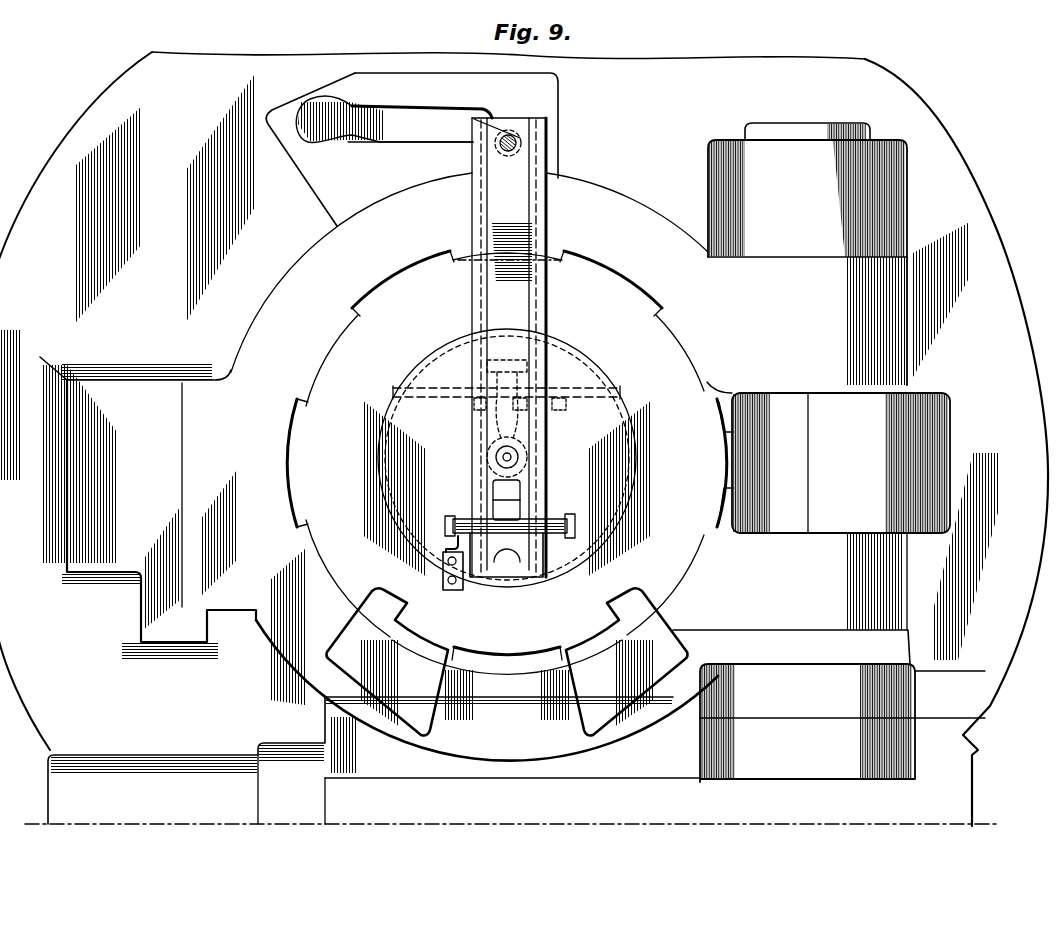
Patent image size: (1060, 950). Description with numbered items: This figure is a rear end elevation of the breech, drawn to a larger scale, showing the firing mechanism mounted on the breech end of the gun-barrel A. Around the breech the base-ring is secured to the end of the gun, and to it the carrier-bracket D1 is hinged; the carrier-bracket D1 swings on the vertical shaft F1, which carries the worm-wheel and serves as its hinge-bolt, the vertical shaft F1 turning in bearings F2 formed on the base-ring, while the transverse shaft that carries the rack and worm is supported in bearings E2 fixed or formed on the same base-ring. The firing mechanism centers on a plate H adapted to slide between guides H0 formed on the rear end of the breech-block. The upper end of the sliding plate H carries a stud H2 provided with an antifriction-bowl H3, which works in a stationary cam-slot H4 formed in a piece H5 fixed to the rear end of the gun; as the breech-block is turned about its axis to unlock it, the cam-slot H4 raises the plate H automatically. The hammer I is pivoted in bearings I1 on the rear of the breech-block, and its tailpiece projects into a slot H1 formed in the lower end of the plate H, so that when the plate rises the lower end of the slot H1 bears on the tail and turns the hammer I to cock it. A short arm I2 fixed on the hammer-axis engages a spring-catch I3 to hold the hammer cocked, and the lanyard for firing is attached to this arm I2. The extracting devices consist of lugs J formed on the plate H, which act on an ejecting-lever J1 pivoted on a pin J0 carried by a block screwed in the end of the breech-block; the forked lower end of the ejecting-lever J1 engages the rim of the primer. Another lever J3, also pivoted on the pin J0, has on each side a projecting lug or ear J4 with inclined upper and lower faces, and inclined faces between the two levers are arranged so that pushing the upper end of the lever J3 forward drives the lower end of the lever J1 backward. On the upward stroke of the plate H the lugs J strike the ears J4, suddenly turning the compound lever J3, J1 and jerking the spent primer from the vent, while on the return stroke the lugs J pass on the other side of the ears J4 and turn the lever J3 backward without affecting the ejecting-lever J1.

The breech end of the gun-barrel A is at (524, 439).
The carrier-bracket D1 is at (482, 467).
The bearings E2 is at (512, 727).
The vertical shaft F1 is at (795, 123).
The bearings F2 is at (807, 262).
The sliding plate H is at (511, 347).
The guides H0 is at (473, 297).
The slot H1 is at (506, 555).
The stud H2 is at (521, 147).
The antifriction-bowl H3 is at (518, 139).
The cam-slot H4 is at (394, 119).
The piece H5 is at (412, 149).
The hammer I is at (506, 500).
The bearings I1 is at (546, 520).
The short arm I2 is at (455, 528).
The spring-catch I3 is at (447, 551).
The lugs J is at (476, 405).
The pin J0 is at (506, 399).
The ejecting-lever J1 is at (545, 414).
The lever J3 is at (505, 360).
The projecting lug or ear J4 is at (530, 366).